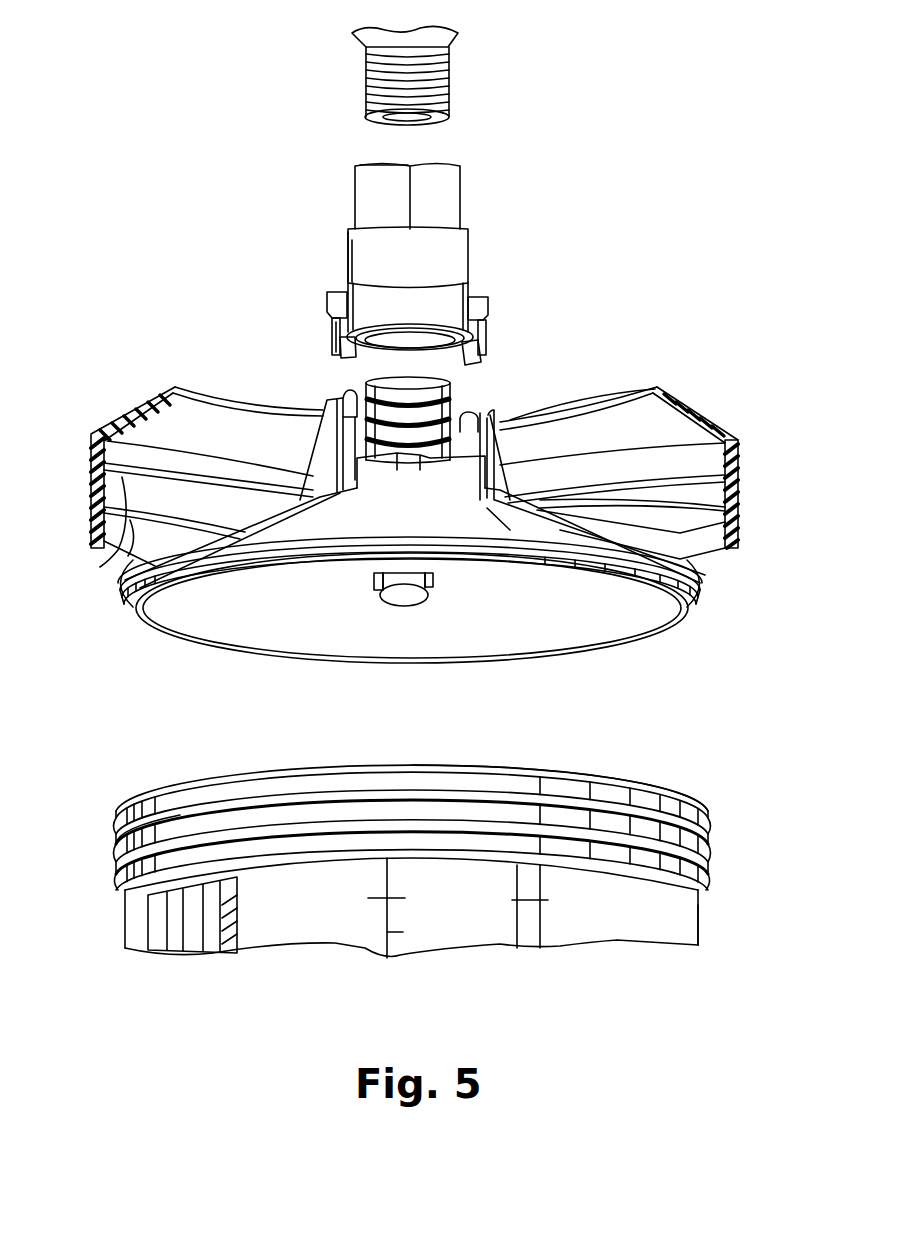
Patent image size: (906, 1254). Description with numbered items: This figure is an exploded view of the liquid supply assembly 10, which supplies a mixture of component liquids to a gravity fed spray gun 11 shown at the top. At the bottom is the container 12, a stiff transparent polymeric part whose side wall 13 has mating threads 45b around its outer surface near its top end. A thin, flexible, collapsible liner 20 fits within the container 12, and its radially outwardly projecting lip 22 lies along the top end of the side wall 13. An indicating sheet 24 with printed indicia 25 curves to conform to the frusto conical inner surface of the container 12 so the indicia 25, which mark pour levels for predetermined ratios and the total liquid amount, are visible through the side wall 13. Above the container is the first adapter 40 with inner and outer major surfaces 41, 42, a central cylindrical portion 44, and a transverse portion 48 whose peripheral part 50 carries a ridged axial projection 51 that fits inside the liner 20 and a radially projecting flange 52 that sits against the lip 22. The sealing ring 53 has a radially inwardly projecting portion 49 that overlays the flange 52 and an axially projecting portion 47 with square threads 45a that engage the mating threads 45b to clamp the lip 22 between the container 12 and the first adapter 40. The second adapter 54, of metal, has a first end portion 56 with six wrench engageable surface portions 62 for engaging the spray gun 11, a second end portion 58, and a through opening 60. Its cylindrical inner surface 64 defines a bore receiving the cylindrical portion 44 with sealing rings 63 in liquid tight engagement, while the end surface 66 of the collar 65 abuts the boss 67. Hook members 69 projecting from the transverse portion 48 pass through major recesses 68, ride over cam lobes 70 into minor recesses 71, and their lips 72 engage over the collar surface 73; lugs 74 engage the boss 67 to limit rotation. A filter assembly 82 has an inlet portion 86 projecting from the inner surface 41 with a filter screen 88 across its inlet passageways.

The liquid supply assembly 10 is at (655, 309).
The spray gun 11 is at (450, 84).
The container 12 is at (383, 952).
The side wall 13 is at (685, 930).
The liner 20 is at (160, 788).
The lip 22 is at (698, 802).
The indicating sheet 24 is at (498, 930).
The indicia 25 is at (237, 953).
The first adapter 40 is at (435, 631).
The inner major surface 41 is at (245, 628).
The outer major surface 42 is at (268, 532).
The central cylindrical portion 44 is at (370, 385).
The square threads 45a is at (100, 567).
The mating threads 45b is at (118, 866).
The axially projecting portion 47 is at (738, 522).
The transverse portion 48 is at (432, 526).
The radially inwardly projecting portion 49 is at (660, 410).
The peripheral part 50 is at (585, 565).
The axial projection 51 is at (545, 565).
The radially projecting flange 52 is at (700, 585).
The sealing ring 53 is at (738, 455).
The second adapter 54 is at (472, 246).
The first end portion 56 is at (372, 165).
The second end portion 58 is at (340, 333).
The through opening 60 is at (432, 338).
The wrench engageable surface portions 62 is at (440, 190).
The sealing rings 63 is at (455, 418).
The cylindrical inner surface 64 is at (410, 338).
The collar 65 is at (385, 280).
The end surface 66 is at (395, 292).
The boss 67 is at (498, 428).
The major recesses 68 is at (476, 322).
The hook members 69 is at (325, 458).
The cam lobes 70 is at (330, 300).
The minor recesses 71 is at (346, 320).
The lips 72 is at (318, 412).
The surface 73 is at (344, 300).
The lugs 74 is at (347, 352).
The filter assembly 82 is at (433, 582).
The inlet portion 86 is at (375, 590).
The filter screen 88 is at (398, 578).